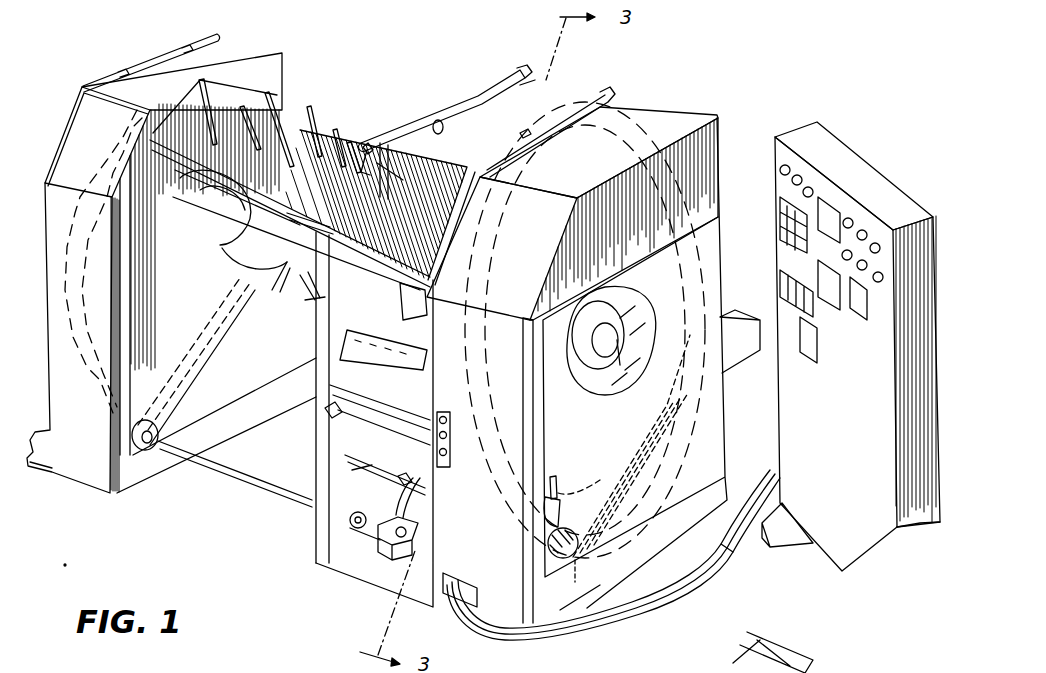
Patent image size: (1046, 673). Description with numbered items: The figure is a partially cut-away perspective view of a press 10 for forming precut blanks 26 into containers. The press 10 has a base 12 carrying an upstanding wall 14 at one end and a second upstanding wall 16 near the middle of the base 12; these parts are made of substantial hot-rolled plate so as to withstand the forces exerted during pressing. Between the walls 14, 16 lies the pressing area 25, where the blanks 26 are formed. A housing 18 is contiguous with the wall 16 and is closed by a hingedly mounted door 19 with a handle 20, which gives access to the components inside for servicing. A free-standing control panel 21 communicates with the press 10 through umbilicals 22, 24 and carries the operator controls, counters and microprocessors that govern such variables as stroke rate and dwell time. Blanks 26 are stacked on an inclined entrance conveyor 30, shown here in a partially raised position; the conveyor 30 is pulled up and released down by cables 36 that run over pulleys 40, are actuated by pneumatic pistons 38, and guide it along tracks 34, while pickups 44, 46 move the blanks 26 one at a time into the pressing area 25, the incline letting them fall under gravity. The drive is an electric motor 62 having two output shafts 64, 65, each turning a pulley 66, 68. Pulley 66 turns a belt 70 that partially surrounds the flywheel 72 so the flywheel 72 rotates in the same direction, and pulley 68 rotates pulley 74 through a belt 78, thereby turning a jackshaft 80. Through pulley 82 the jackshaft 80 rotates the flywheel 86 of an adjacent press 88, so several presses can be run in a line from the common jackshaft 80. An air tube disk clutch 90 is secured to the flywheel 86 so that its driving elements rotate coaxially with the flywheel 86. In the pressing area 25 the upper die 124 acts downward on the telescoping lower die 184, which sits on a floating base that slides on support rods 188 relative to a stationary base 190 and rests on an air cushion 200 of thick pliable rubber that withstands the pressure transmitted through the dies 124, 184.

The press 10 is at (801, 56).
The base 12 is at (368, 584).
The upstanding wall 14 is at (316, 531).
The upstanding wall 16 is at (431, 603).
The housing 18 is at (682, 98).
The door 19 is at (691, 463).
The handle 20 is at (557, 478).
The control panel 21 is at (879, 144).
The umbilical 22 is at (732, 558).
The umbilical 24 is at (567, 642).
The pressing area 25 is at (533, 110).
The blanks 26 is at (320, 127).
The entrance conveyor 30 is at (884, 668).
The tracks 34 is at (368, 145).
The cables 36 is at (410, 122).
The pneumatic pistons 38 is at (472, 96).
The pulleys 40 is at (385, 135).
The pickup 44 is at (285, 292).
The pickup 46 is at (216, 247).
The electric motor 62 is at (420, 504).
The output shaft 64 is at (573, 581).
The output shaft 65 is at (413, 476).
The pulley 66 is at (584, 551).
The pulley 68 is at (397, 478).
The belt 70 is at (600, 470).
The flywheel 72 is at (636, 110).
The pulley 74 is at (350, 533).
The belt 78 is at (378, 496).
The jackshaft 80 is at (265, 494).
The pulley 82 is at (148, 455).
The flywheel 86 is at (211, 326).
The adjacent press 88 is at (259, 36).
The air tube disk clutch 90 is at (647, 378).
The upper die 124 is at (408, 292).
The lower die 184 is at (393, 336).
The support rods 188 is at (320, 420).
The stationary base 190 is at (351, 458).
The air cushion 200 is at (338, 438).